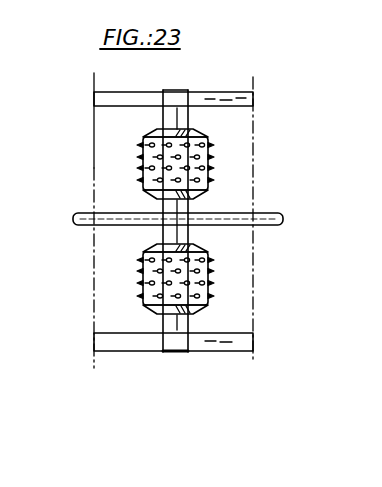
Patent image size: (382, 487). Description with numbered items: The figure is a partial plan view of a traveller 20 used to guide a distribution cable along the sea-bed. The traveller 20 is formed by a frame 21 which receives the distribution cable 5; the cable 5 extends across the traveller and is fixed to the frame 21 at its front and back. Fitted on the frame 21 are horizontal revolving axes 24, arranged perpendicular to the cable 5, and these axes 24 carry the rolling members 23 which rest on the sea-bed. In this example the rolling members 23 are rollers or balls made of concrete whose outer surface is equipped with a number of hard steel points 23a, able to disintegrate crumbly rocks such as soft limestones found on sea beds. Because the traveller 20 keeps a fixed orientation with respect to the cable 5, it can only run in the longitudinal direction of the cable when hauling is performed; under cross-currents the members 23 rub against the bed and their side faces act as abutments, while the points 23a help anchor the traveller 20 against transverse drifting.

The distribution cable 5 is at (230, 220).
The traveller 20 is at (130, 355).
The frame 21 is at (205, 98).
The rolling members 23 is at (208, 160).
The hard steel points 23a is at (138, 168).
The horizontal revolving axes 24 is at (188, 322).